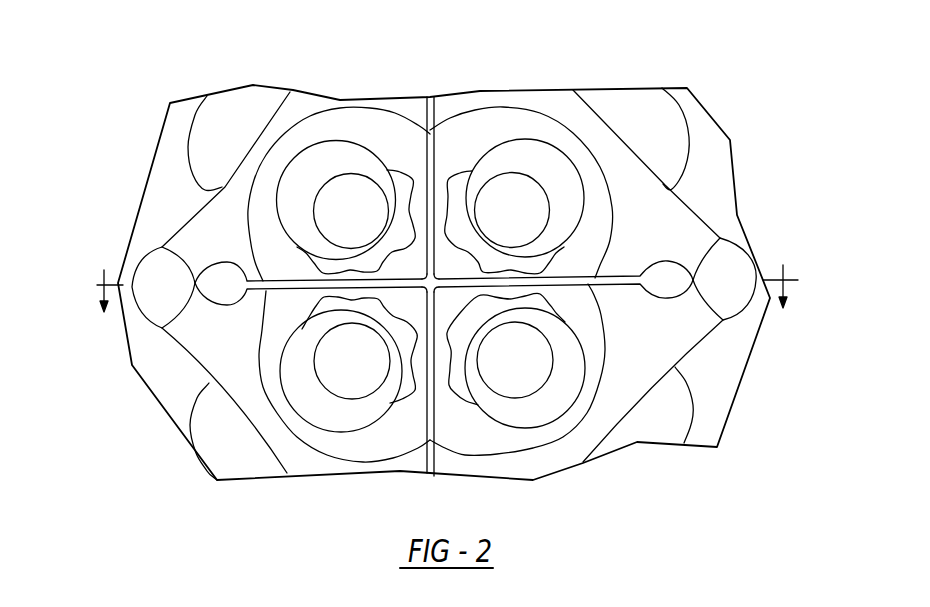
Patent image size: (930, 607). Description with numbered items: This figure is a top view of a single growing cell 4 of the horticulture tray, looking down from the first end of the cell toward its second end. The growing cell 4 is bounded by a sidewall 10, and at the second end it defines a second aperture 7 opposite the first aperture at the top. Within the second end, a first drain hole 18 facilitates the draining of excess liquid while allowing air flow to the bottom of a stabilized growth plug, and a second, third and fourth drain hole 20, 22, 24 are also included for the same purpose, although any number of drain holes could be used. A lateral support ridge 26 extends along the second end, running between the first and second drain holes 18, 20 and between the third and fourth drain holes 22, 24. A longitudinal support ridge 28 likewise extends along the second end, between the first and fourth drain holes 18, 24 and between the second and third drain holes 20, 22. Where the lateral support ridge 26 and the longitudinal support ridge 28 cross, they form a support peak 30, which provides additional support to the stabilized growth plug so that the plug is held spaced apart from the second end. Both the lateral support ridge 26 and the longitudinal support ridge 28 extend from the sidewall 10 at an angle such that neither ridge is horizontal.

The growing cell 4 is at (535, 102).
The second aperture 7 is at (447, 309).
The sidewall 10 is at (600, 148).
The first drain hole 18 is at (347, 383).
The second drain hole 20 is at (348, 198).
The third drain hole 22 is at (509, 193).
The fourth drain hole 24 is at (523, 370).
The lateral support ridge 26 is at (566, 281).
The longitudinal support ridge 28 is at (428, 404).
The support peak 30 is at (432, 282).